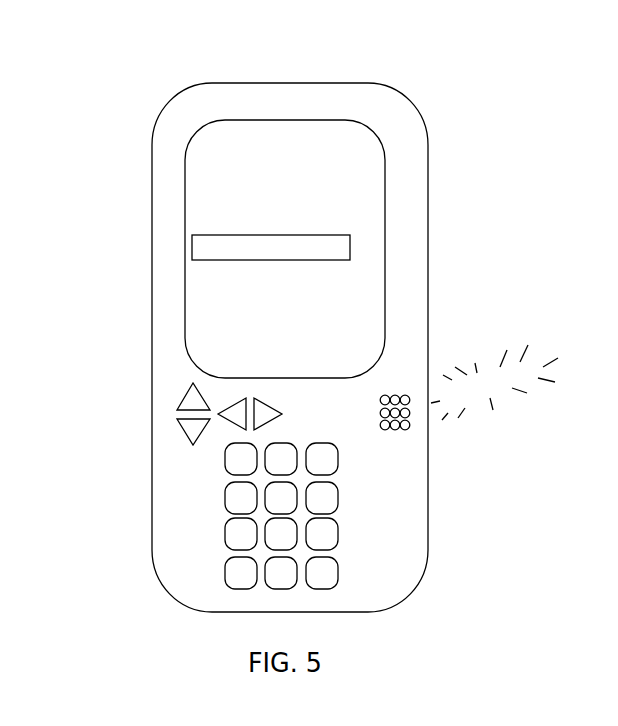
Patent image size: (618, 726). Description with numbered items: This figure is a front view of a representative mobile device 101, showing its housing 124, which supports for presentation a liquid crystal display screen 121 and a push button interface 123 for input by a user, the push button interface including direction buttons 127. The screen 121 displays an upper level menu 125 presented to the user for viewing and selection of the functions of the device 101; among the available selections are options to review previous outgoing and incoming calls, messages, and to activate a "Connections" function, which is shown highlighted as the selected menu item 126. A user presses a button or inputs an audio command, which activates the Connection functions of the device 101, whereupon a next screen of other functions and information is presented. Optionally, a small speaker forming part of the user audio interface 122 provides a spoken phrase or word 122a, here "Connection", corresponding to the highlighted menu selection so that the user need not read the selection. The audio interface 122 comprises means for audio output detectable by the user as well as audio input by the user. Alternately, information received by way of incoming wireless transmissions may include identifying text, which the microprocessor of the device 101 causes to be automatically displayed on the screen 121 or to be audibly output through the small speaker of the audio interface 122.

The mobile device 101 is at (311, 329).
The liquid crystal display screen 121 is at (322, 128).
The user audio interface 122 is at (405, 400).
The spoken phrase or word 122a is at (475, 420).
The push button interface 123 is at (212, 537).
The housing 124 is at (405, 157).
The upper level menu 125 is at (197, 183).
The selected menu item 126 is at (200, 262).
The direction buttons 127 is at (168, 448).